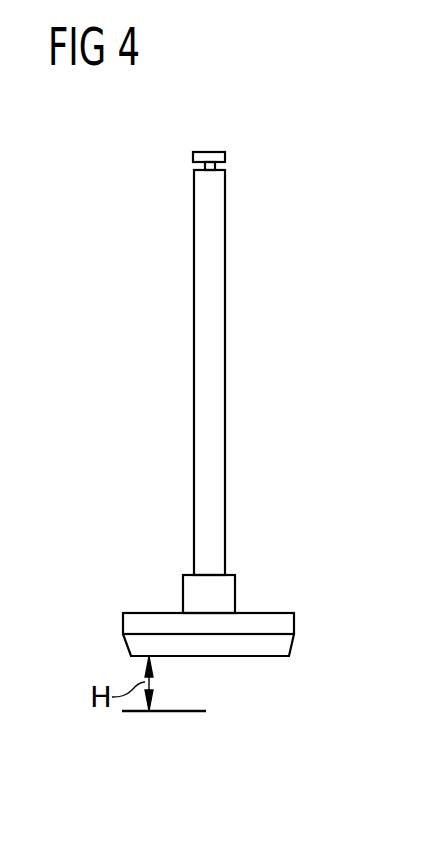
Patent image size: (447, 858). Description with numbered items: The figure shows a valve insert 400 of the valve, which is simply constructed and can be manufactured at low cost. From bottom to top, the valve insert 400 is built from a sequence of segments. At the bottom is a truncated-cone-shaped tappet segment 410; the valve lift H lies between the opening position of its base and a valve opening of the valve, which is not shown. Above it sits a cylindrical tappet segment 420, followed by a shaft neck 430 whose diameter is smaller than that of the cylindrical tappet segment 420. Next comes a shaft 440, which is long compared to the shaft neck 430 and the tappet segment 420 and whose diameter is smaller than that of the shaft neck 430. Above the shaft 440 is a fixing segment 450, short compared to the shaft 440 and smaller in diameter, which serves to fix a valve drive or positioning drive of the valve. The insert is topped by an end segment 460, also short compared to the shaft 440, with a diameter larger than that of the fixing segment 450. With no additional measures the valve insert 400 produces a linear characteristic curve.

The valve insert 400 is at (261, 137).
The truncated-cone-shaped tappet segment 410 is at (283, 641).
The cylindrical tappet segment 420 is at (133, 622).
The shaft neck 430 is at (195, 585).
The shaft 440 is at (205, 373).
The fixing segment 450 is at (215, 167).
The end segment 460 is at (197, 158).